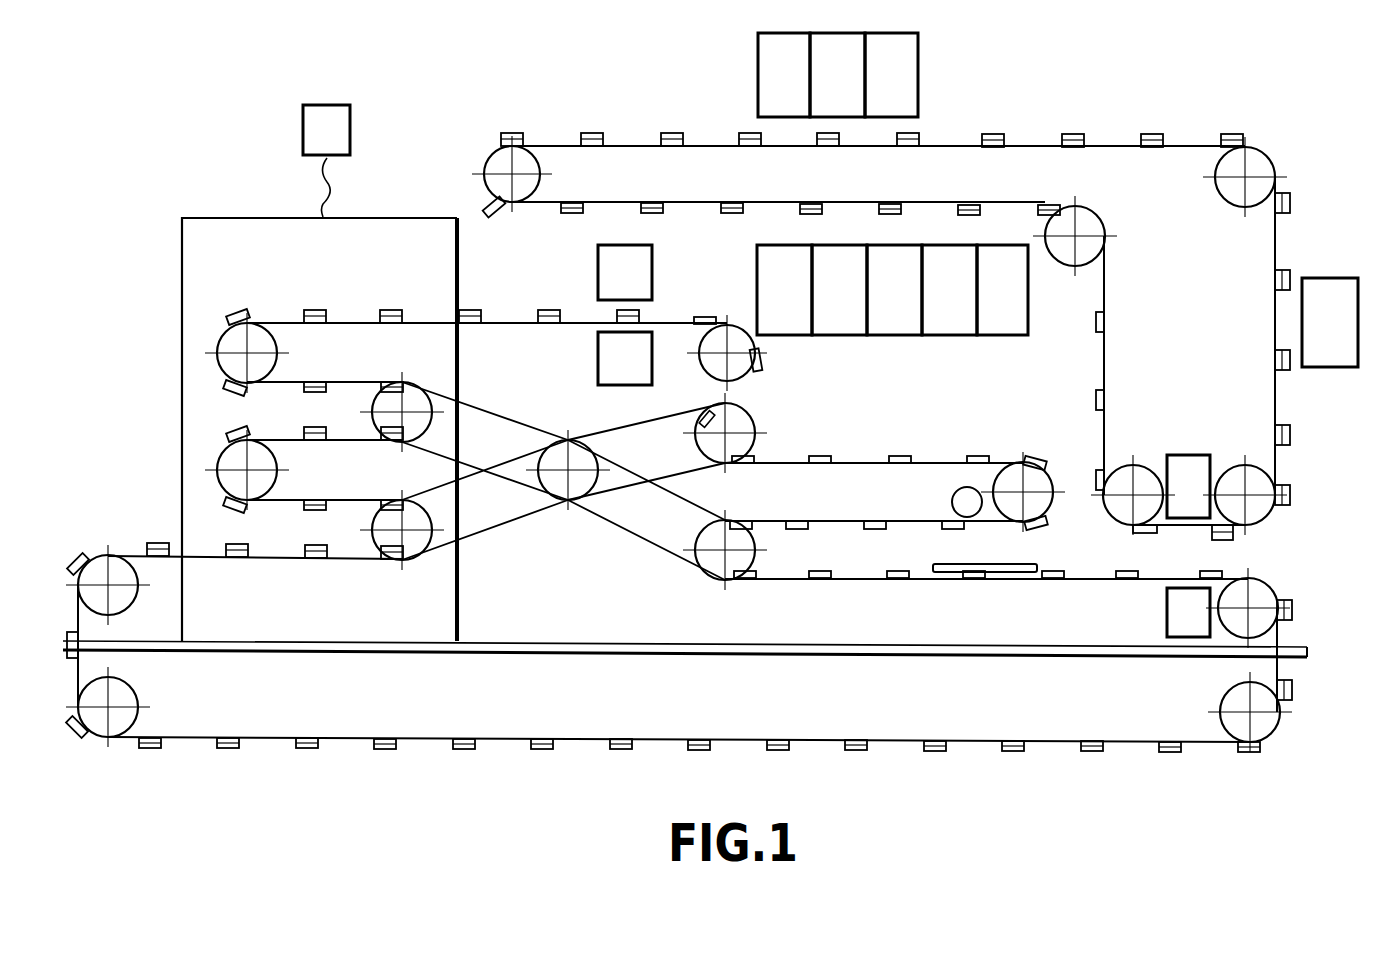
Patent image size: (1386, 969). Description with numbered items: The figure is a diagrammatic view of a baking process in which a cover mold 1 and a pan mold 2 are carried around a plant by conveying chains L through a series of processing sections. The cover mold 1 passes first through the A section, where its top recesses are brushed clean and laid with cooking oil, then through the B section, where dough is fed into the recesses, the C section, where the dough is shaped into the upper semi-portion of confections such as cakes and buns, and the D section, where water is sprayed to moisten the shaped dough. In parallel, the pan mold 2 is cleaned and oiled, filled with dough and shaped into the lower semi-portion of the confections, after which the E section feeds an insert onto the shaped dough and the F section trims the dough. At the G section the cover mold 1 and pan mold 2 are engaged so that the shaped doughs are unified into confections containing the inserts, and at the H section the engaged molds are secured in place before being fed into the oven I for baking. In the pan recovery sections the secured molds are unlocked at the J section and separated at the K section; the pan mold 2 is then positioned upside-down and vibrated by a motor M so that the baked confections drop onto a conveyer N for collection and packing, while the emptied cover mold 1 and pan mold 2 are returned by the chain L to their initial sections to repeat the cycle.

The cover mold 1 is at (567, 220).
The pan mold 2 is at (703, 317).
The chain L is at (1114, 147).
The conveyer N is at (1030, 562).
The motor M is at (967, 502).
The A section A is at (1022, 258).
The B section B is at (959, 268).
The C section C is at (903, 268).
The D section D is at (784, 75).
The E section E is at (839, 290).
The F section F is at (784, 290).
The G section G is at (625, 273).
The H section H is at (625, 358).
The oven I is at (326, 156).
The J section J is at (1188, 613).
The K section K is at (1188, 487).